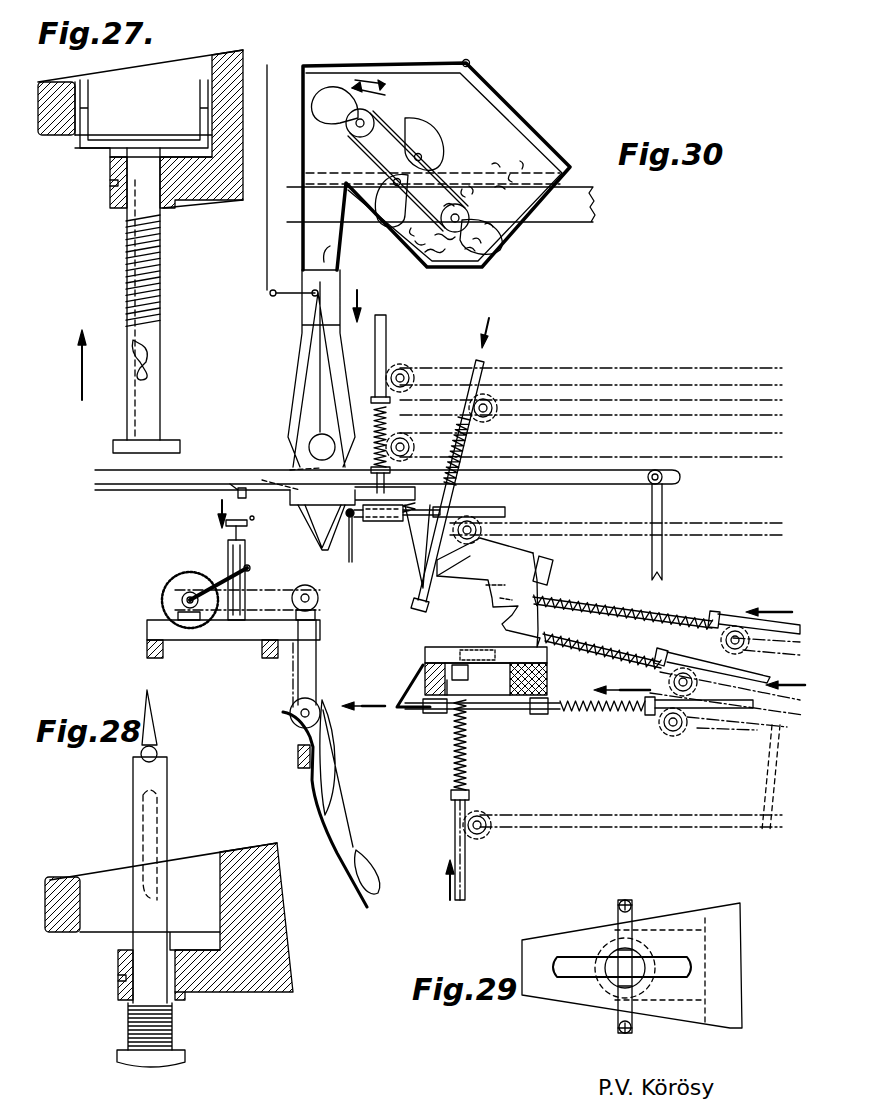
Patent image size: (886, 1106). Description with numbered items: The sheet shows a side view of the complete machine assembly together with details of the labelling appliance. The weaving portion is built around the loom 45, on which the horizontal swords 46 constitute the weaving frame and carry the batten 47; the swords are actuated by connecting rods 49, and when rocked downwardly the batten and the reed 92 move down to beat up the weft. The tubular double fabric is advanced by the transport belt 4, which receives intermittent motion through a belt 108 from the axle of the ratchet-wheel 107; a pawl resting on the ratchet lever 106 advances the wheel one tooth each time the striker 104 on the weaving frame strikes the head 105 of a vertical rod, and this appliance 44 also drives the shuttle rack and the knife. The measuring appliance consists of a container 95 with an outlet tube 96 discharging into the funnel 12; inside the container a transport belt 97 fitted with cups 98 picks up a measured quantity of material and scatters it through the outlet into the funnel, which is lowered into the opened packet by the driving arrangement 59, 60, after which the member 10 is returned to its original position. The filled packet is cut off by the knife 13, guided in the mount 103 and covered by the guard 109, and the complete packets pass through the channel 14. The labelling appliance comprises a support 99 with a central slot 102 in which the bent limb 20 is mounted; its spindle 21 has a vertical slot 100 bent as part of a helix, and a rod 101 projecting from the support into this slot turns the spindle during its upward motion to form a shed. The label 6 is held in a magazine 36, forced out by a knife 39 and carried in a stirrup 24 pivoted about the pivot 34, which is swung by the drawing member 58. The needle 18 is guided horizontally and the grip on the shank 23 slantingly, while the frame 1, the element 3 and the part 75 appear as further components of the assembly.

In FIG. 30, the frame 1 is at (267, 176).
In FIG. 30, the needle blade 3 is at (335, 778).
In FIG. 30, the transport belt 4 is at (297, 680).
In FIG. 30, the label 6 is at (373, 875).
In FIG. 30, the member 10 is at (353, 555).
In FIG. 30, the funnel 12 is at (310, 385).
In FIG. 30, the knife 13 is at (420, 712).
In FIG. 30, the channel 14 is at (327, 848).
In FIG. 30, the needle 18 is at (600, 602).
In FIG. 27, the bent limb 20 is at (88, 100).
In FIG. 28, the bent limb 20 is at (156, 722).
In FIG. 29, the bent limb 20 is at (620, 1033).
In FIG. 27, the spindle 21 is at (158, 282).
In FIG. 30, the spindle 21 is at (468, 775).
In FIG. 28, the spindle 21 is at (162, 771).
In FIG. 29, the spindle 21 is at (610, 985).
In FIG. 30, the shank 23 is at (615, 645).
In FIG. 30, the stirrup 24 is at (415, 555).
In FIG. 30, the pivot 34 is at (408, 445).
In FIG. 30, the magazine 36 is at (545, 560).
In FIG. 30, the knife 39 is at (460, 437).
In FIG. 30, the appliance 44 is at (320, 545).
In FIG. 30, the loom 45 is at (590, 222).
In FIG. 30, the swords 46 is at (676, 475).
In FIG. 30, the batten 47 is at (305, 505).
In FIG. 30, the connecting rods 49 is at (662, 562).
In FIG. 30, the drawing member 58 is at (740, 380).
In FIG. 30, the driving arrangement 59 is at (490, 842).
In FIG. 30, the driving arrangement 60 is at (388, 342).
In FIG. 30, the motor block 75 is at (388, 522).
In FIG. 30, the reed 92 is at (280, 478).
In FIG. 30, the container 95 is at (300, 100).
In FIG. 30, the outlet tube 96 is at (318, 254).
In FIG. 30, the transport belt 97 is at (392, 125).
In FIG. 30, the cups 98 is at (430, 145).
In FIG. 27, the support 99 is at (212, 192).
In FIG. 30, the support 99 is at (540, 660).
In FIG. 28, the support 99 is at (265, 992).
In FIG. 29, the support 99 is at (728, 905).
In FIG. 27, the vertical slot 100 is at (152, 362).
In FIG. 28, the vertical slot 100 is at (143, 833).
In FIG. 27, the rod 101 is at (110, 184).
In FIG. 28, the rod 101 is at (118, 978).
In FIG. 27, the central slot 102 is at (177, 70).
In FIG. 28, the central slot 102 is at (210, 845).
In FIG. 29, the central slot 102 is at (568, 955).
In FIG. 30, the mount 103 is at (540, 714).
In FIG. 30, the striker 104 is at (250, 496).
In FIG. 30, the head 105 is at (245, 528).
In FIG. 30, the ratchet lever 106 is at (225, 580).
In FIG. 30, the ratchet-wheel 107 is at (170, 585).
In FIG. 30, the belt 108 is at (295, 591).
In FIG. 30, the guard 109 is at (412, 698).